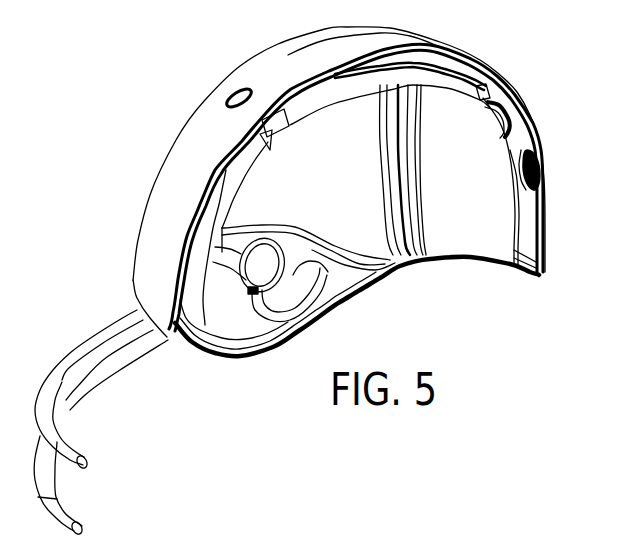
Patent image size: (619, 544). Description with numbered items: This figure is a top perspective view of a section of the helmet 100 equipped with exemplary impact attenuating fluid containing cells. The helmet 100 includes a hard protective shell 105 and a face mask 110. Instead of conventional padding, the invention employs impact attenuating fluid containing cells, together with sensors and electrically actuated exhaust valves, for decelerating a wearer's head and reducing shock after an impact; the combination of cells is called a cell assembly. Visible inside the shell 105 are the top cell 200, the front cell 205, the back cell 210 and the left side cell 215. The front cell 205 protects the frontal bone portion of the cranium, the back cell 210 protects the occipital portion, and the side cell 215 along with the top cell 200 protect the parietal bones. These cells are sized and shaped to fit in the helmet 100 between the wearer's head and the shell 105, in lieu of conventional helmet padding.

The helmet 100 is at (487, 52).
The hard protective shell 105 is at (291, 54).
The face mask 110 is at (90, 340).
The top cell 200 is at (325, 105).
The front cell 205 is at (265, 158).
The back cell 210 is at (481, 188).
The left side cell 215 is at (346, 188).